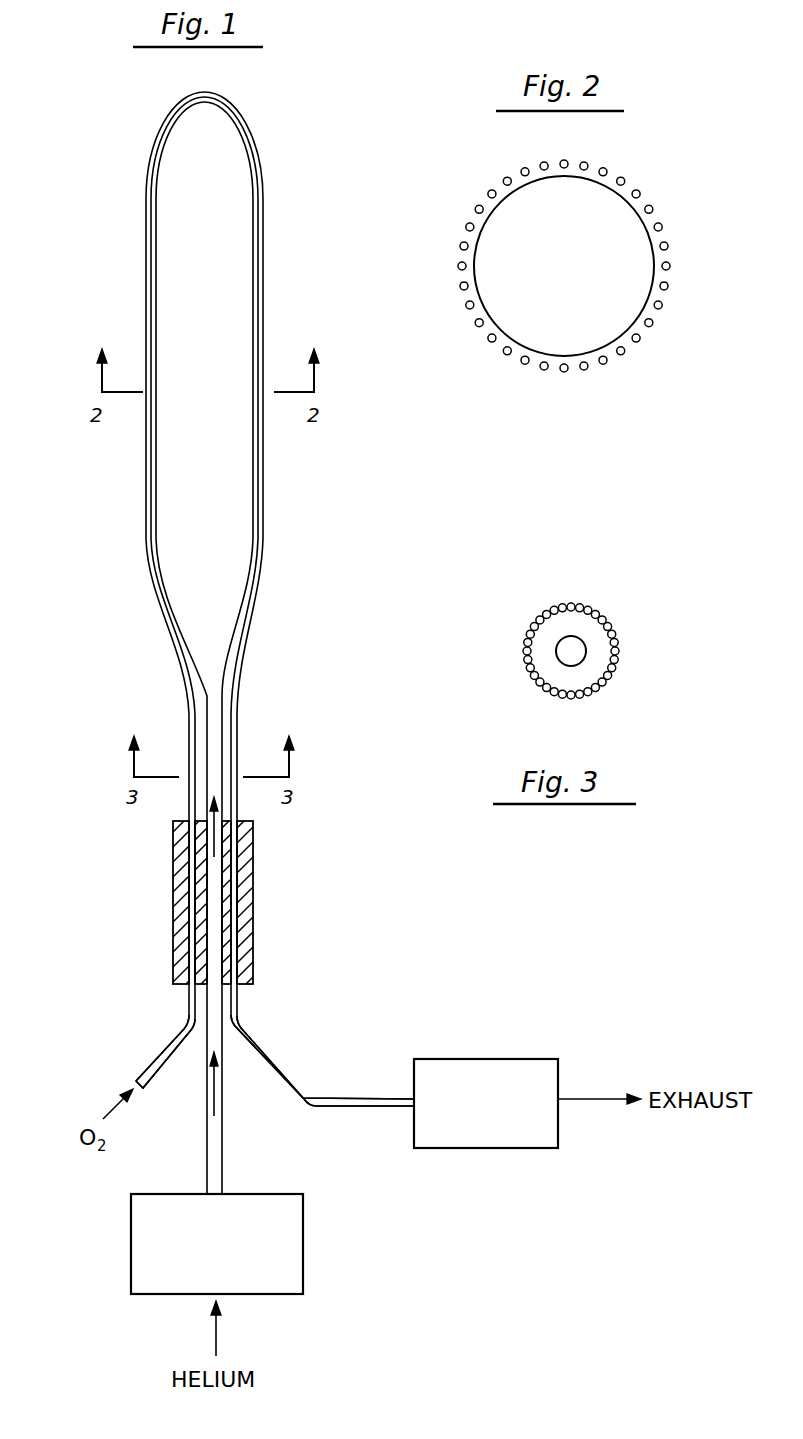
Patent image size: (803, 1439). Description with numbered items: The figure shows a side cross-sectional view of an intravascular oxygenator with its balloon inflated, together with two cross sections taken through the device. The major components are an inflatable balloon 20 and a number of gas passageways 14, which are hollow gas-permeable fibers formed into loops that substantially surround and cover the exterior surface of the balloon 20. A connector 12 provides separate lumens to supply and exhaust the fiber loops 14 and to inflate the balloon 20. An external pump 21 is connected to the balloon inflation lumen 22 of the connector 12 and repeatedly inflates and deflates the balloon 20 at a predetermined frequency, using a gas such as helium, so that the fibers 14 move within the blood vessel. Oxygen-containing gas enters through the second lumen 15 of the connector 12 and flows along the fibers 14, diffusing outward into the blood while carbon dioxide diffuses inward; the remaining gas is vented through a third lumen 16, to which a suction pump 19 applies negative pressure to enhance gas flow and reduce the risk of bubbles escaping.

In FIG. 1, the connector 12 is at (172, 895).
In FIG. 1, the gas passageways 14 is at (145, 259).
In FIG. 2, the gas passageways 14 is at (661, 228).
In FIG. 3, the gas passageways 14 is at (618, 645).
In FIG. 1, the second lumen 15 is at (166, 1046).
In FIG. 1, the third lumen 16 is at (266, 1050).
In FIG. 1, the suction pump 19 is at (482, 1060).
In FIG. 1, the inflatable balloon 20 is at (248, 259).
In FIG. 2, the inflatable balloon 20 is at (652, 242).
In FIG. 1, the external pump 21 is at (130, 1233).
In FIG. 1, the balloon inflation lumen 22 is at (206, 722).
In FIG. 3, the balloon inflation lumen 22 is at (555, 652).